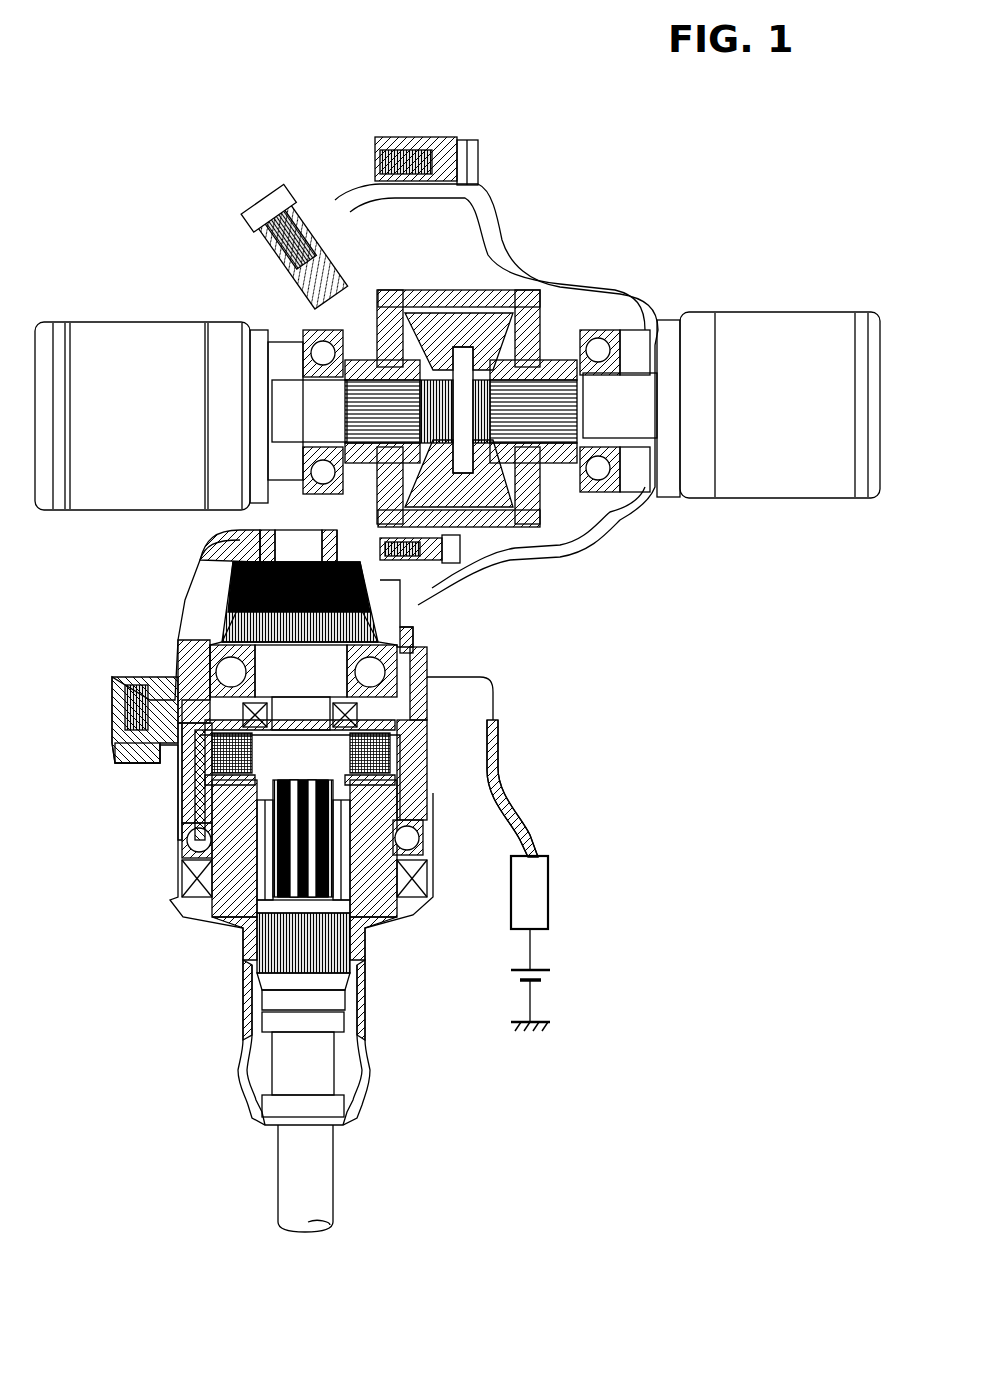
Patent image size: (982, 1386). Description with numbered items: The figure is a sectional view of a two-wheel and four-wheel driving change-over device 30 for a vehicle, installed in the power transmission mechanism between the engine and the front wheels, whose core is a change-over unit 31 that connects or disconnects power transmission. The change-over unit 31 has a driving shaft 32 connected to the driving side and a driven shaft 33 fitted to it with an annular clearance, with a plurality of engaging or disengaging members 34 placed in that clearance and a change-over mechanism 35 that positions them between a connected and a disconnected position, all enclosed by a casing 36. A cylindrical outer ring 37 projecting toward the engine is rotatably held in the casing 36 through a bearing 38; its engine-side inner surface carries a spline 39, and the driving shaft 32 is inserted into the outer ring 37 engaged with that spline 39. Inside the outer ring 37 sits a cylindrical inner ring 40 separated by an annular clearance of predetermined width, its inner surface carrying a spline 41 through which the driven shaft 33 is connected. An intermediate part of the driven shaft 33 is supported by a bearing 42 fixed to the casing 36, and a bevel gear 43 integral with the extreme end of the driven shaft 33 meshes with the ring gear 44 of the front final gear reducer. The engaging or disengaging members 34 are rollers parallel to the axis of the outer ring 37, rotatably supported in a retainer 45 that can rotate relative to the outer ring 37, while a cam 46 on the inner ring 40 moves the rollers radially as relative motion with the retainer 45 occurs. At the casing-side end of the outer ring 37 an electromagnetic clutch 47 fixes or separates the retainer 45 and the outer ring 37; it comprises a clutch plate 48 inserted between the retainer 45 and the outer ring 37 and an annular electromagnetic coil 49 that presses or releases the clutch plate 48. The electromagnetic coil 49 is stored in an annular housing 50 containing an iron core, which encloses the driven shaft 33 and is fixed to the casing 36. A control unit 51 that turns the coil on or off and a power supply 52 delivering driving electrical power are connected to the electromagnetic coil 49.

The electromagnetic clutch unit 30 is at (445, 698).
The change-over unit 31 is at (405, 912).
The driving shaft 32 is at (320, 1185).
The driven shaft 33 is at (268, 680).
The engaging or disengaging members 34 is at (232, 905).
The change-over mechanism 35 is at (185, 826).
The casing 36 is at (178, 782).
The outer ring 37 is at (370, 1000).
The bearing 38 is at (185, 852).
The spline 39 is at (253, 988).
The inner ring 40 is at (255, 930).
The spline 41 is at (290, 795).
The bearing 42 is at (425, 660).
The bevel gear 43 is at (235, 588).
The ring gear 44 is at (463, 600).
The retainer 45 is at (415, 805).
The cam 46 is at (400, 862).
The electromagnetic clutch 47 is at (572, 728).
The clutch plate 48 is at (435, 782).
The electromagnetic coil 49 is at (430, 745).
The housing 50 is at (195, 800).
The control unit 51 is at (535, 905).
The power supply 52 is at (555, 978).